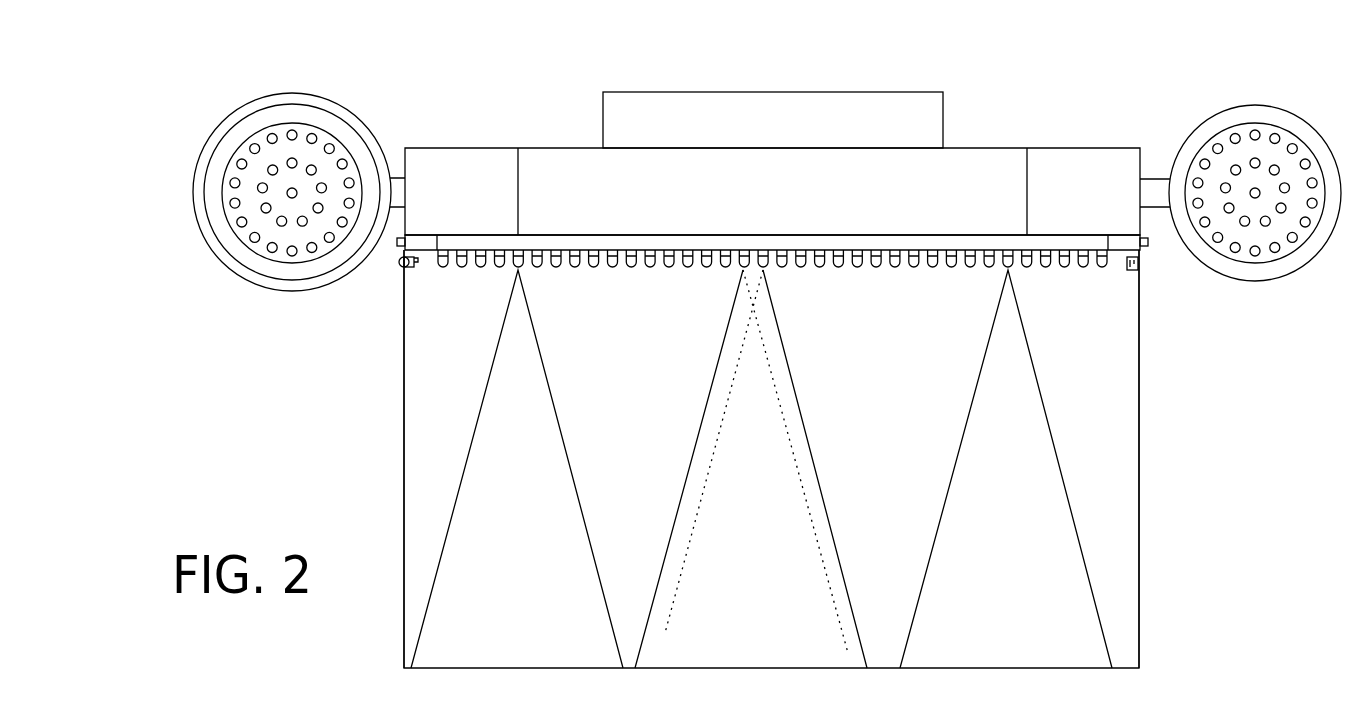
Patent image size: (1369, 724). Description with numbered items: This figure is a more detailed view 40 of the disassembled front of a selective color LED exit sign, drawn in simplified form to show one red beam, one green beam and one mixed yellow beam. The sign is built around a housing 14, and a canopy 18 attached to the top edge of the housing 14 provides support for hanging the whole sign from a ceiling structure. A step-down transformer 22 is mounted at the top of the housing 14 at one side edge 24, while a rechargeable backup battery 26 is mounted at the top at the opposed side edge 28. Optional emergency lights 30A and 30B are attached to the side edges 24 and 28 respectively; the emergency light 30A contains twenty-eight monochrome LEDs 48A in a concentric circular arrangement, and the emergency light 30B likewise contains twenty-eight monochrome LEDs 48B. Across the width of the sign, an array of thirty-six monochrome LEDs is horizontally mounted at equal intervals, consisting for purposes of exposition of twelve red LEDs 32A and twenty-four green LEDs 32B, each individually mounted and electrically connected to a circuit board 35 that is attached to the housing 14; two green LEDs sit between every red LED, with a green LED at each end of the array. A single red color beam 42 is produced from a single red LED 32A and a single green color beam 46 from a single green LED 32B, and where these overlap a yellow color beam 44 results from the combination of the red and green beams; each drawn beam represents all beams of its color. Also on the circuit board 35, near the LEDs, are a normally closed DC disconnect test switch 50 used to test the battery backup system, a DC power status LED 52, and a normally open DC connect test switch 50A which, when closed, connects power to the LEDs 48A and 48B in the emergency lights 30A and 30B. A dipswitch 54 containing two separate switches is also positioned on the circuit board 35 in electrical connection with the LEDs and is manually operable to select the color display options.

The housing 14 is at (1142, 468).
The canopy 18 is at (757, 122).
The step-down transformer 22 is at (475, 197).
The side edge 24 is at (404, 470).
The rechargeable backup battery 26 is at (1081, 177).
The side edge 28 is at (1141, 568).
The emergency light 30A is at (253, 103).
The emergency light 30B is at (1268, 104).
The red LEDs 32A is at (520, 270).
The green LEDs 32B is at (764, 270).
The circuit board 35 is at (702, 250).
The detailed view 40 is at (330, 655).
The red color beam 42 is at (447, 648).
The yellow color beam 44 is at (687, 653).
The green color beam 46 is at (1078, 638).
The monochrome LEDs 48A is at (273, 248).
The monochrome LEDs 48B is at (1293, 238).
The normally closed DC disconnect test switch 50 is at (402, 247).
The normally open DC connect test switch 50A is at (1143, 250).
The DC power status LED 52 is at (405, 267).
The dipswitch 54 is at (1133, 270).